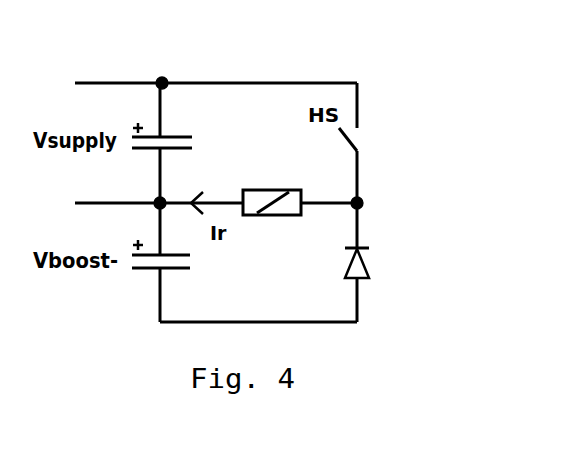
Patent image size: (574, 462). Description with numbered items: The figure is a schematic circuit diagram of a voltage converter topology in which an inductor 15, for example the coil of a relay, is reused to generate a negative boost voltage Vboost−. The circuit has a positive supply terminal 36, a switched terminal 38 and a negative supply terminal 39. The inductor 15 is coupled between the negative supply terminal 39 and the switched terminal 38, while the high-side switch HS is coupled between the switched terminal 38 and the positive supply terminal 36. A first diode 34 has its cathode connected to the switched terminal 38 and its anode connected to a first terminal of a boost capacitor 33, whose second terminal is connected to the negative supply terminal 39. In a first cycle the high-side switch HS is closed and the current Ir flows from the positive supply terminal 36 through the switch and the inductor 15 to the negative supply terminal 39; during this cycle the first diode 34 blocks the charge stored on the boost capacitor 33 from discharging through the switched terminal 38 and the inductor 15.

The inductor 15 is at (284, 192).
The boost capacitor 33 is at (190, 256).
The first diode 34 is at (369, 270).
The positive supply terminal 36 is at (160, 80).
The switched terminal 38 is at (362, 198).
The negative supply terminal 39 is at (159, 205).